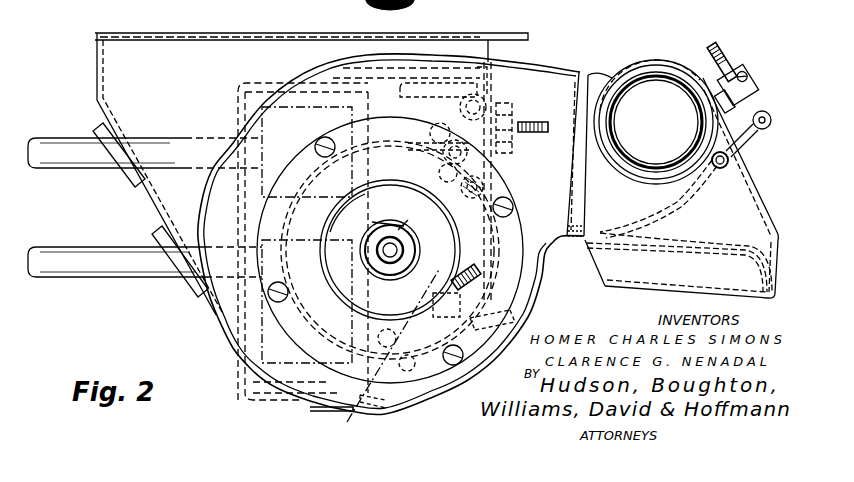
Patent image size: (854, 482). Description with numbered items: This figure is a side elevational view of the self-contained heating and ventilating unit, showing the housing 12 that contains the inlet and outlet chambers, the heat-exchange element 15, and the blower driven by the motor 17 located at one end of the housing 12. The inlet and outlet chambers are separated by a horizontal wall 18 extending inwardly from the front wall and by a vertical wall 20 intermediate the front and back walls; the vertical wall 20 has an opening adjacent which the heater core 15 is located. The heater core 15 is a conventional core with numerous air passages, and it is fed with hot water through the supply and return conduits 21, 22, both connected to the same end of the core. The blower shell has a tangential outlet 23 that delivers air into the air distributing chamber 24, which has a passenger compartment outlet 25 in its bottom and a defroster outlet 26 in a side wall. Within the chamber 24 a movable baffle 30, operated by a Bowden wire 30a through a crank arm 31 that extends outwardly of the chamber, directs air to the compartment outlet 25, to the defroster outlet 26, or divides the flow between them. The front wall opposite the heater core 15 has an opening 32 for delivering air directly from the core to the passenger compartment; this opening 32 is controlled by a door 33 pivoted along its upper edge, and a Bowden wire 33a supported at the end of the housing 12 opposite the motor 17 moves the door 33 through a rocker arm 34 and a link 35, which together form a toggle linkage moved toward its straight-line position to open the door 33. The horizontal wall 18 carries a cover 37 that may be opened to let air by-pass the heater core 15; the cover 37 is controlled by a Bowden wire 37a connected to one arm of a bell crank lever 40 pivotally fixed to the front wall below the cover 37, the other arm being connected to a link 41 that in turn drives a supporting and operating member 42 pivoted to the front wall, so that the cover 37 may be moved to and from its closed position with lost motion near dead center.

The housing 12 is at (98, 63).
The heat-exchange element 15 is at (262, 323).
The motor 17 is at (402, 190).
The horizontal wall 18 is at (262, 82).
The vertical wall 20 is at (237, 90).
The supply conduit 21 is at (78, 232).
The return conduit 22 is at (85, 160).
The tangential outlet 23 is at (574, 72).
The air distributing chamber 24 is at (762, 198).
The passenger compartment outlet 25 is at (607, 265).
The defroster outlet 26 is at (617, 108).
The movable baffle 30 is at (674, 205).
The Bowden wire 30a is at (728, 65).
The crank arm 31 is at (743, 143).
The opening 32 is at (347, 415).
The door 33 is at (472, 388).
The Bowden wire 33a is at (400, 280).
The rocker arm 34 is at (308, 404).
The link 35 is at (385, 412).
The cover 37 is at (442, 65).
The Bowden wire 37a is at (535, 122).
The bell crank lever 40 is at (500, 163).
The link 41 is at (440, 133).
The supporting and operating member 42 is at (420, 107).